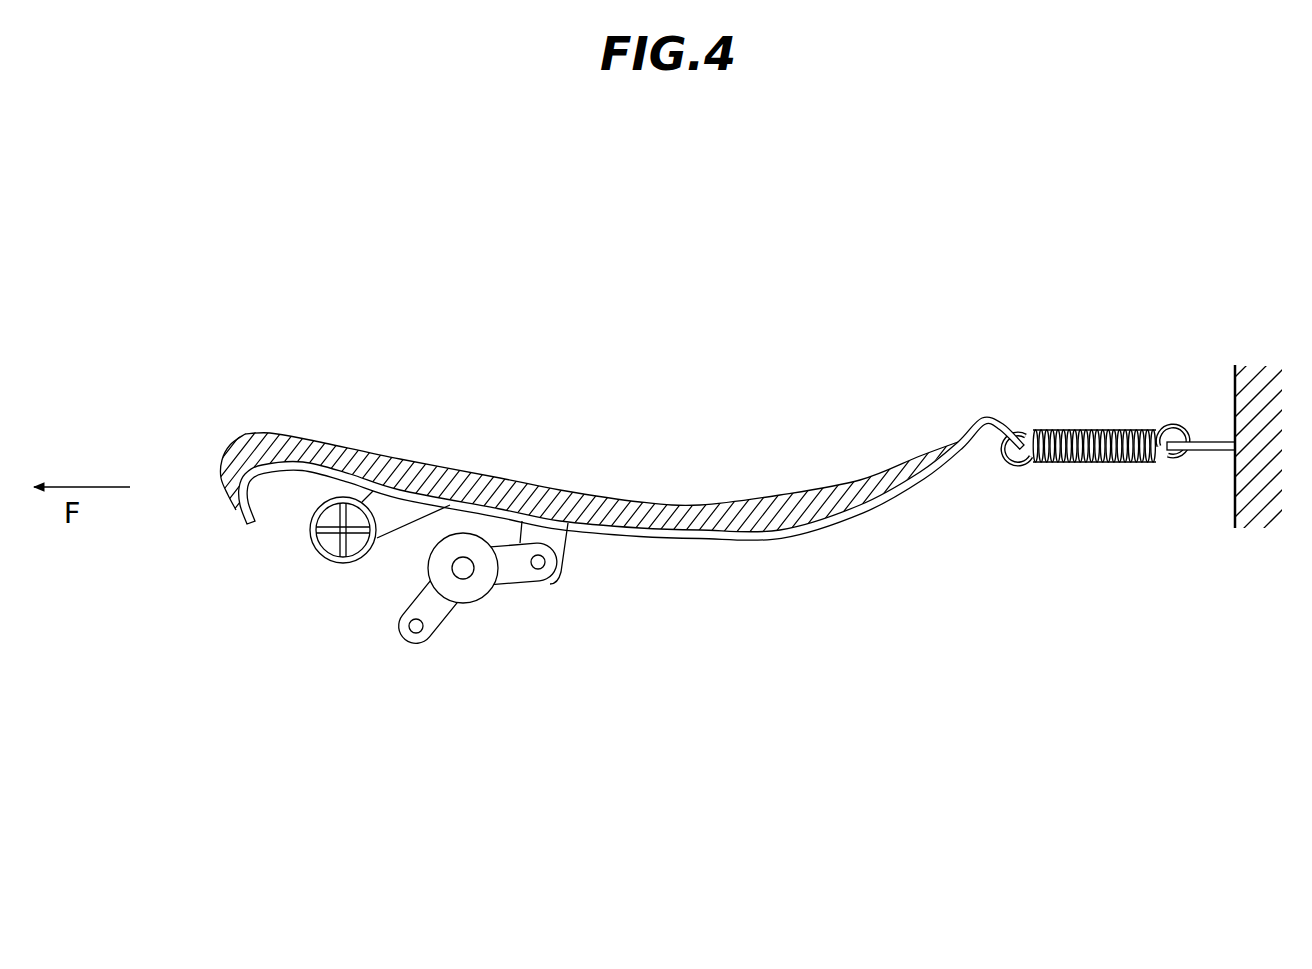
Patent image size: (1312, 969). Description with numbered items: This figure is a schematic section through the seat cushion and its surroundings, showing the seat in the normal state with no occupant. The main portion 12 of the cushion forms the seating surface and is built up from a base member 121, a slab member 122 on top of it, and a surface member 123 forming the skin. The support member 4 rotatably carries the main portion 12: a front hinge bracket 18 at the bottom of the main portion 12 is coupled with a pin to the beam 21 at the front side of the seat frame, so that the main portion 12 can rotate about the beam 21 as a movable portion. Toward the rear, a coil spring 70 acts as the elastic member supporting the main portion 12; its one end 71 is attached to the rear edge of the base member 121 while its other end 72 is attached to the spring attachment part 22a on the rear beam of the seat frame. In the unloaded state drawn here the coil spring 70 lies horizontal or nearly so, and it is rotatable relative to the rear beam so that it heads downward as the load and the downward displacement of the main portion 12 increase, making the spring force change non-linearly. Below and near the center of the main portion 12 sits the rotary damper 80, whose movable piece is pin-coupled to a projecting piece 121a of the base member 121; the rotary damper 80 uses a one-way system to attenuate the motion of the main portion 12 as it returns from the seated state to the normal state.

The main portion 12 is at (583, 442).
The base member 121 is at (814, 537).
The slab member 122 is at (628, 507).
The surface member 123 is at (720, 503).
The projecting piece 121a is at (558, 538).
The support member 4 is at (323, 616).
The front hinge bracket 18 is at (397, 513).
The beam 21 is at (320, 562).
The rotary damper 80 is at (494, 622).
The coil spring 70 is at (1093, 465).
The first hook 71 is at (1034, 395).
The second hook 72 is at (1177, 376).
The spring attachment part 22a is at (1214, 480).